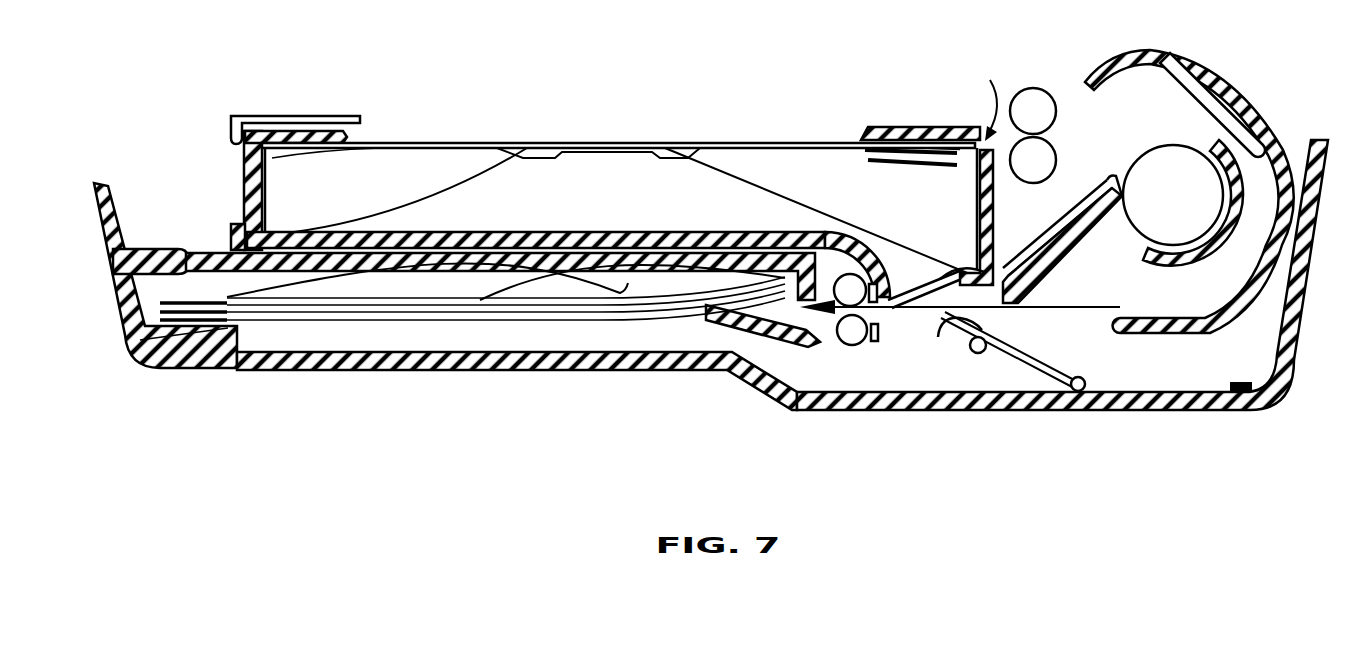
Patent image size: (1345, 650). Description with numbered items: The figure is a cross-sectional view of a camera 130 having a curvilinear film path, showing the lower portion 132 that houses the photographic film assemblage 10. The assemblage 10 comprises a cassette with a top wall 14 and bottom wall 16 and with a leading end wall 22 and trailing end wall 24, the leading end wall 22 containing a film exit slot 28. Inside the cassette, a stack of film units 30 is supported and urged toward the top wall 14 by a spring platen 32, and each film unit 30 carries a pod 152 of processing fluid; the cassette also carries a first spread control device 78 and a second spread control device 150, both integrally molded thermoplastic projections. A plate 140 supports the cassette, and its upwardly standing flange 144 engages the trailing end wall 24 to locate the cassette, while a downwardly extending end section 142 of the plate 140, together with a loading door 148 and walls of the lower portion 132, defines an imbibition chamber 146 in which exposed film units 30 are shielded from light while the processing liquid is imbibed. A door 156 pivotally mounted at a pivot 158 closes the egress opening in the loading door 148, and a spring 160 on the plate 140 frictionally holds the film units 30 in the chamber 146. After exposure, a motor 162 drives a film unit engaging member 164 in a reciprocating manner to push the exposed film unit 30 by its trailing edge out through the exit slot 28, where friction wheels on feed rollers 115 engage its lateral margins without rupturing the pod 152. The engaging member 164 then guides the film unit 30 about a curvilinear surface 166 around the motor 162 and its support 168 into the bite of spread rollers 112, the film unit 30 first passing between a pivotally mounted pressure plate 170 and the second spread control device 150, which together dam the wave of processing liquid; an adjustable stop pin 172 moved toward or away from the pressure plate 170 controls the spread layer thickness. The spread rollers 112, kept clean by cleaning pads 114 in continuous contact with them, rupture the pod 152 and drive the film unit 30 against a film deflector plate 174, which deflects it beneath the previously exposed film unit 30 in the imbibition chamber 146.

The photographic film assemblage 10 is at (537, 96).
The top wall 14 is at (317, 131).
The bottom wall 16 is at (566, 231).
The leading end wall 22 is at (997, 228).
The trailing end wall 24 is at (244, 175).
The film exit slot 28 is at (977, 106).
The film unit 30 is at (376, 150).
The spring platen 32 is at (490, 174).
The first spread control device 78 is at (892, 140).
The spread rollers 112 is at (850, 294).
The cleaning pads 114 is at (880, 318).
The feed rollers 115 is at (1037, 88).
The camera 130 is at (354, 424).
The lower portion 132 is at (1190, 408).
The plate 140 is at (670, 262).
The end section 142 is at (828, 257).
The flange 144 is at (232, 240).
The imbibition chamber 146 is at (333, 332).
The loading door 148 is at (557, 372).
The second spread control device 150 is at (908, 320).
The pod 152 is at (927, 165).
The door 156 is at (190, 362).
The pivot 158 is at (118, 258).
The spring 160 is at (468, 284).
The motor 162 is at (1154, 203).
The film unit engaging member 164 is at (281, 116).
The curvilinear surface 166 is at (1263, 140).
The support 168 is at (1147, 263).
The pressure plate 170 is at (1032, 364).
The adjustable stop pin 172 is at (980, 355).
The film deflector plate 174 is at (790, 334).